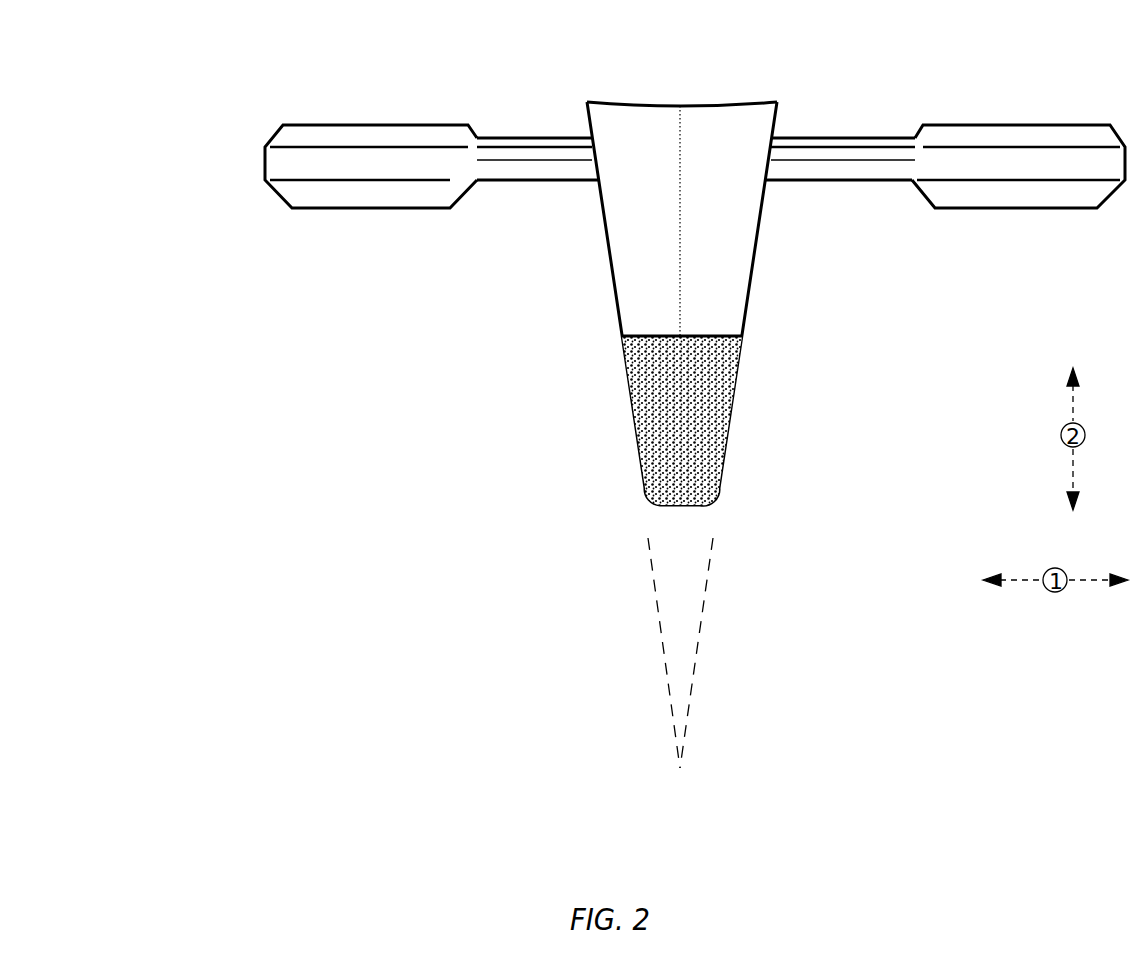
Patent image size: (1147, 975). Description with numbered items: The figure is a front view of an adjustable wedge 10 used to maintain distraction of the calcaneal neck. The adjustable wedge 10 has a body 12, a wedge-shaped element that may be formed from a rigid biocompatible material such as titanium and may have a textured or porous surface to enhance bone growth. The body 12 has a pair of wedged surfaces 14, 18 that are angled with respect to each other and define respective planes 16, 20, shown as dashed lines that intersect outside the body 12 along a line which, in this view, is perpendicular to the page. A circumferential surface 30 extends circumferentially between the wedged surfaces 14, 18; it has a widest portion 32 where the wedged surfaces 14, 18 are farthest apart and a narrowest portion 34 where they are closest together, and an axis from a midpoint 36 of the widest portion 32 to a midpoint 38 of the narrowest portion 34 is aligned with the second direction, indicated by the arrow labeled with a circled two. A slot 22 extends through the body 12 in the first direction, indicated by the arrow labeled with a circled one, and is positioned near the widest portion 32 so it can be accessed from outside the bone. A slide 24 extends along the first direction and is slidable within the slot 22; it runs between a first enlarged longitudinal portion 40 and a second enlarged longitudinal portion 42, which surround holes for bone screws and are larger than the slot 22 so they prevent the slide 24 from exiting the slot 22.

The adjustable wedge 10 is at (121, 148).
The body 12 is at (685, 296).
The wedged surface 14 is at (630, 405).
The plane 16 is at (657, 592).
The wedged surface 18 is at (732, 408).
The plane 20 is at (707, 595).
The slot 22 is at (778, 133).
The slide 24 is at (518, 138).
The circumferential surface 30 is at (722, 277).
The widest portion 32 is at (618, 102).
The narrowest portion 34 is at (695, 508).
The midpoint 36 is at (680, 103).
The midpoint 38 is at (683, 508).
The first enlarged longitudinal portion 40 is at (424, 125).
The second enlarged longitudinal portion 42 is at (960, 125).